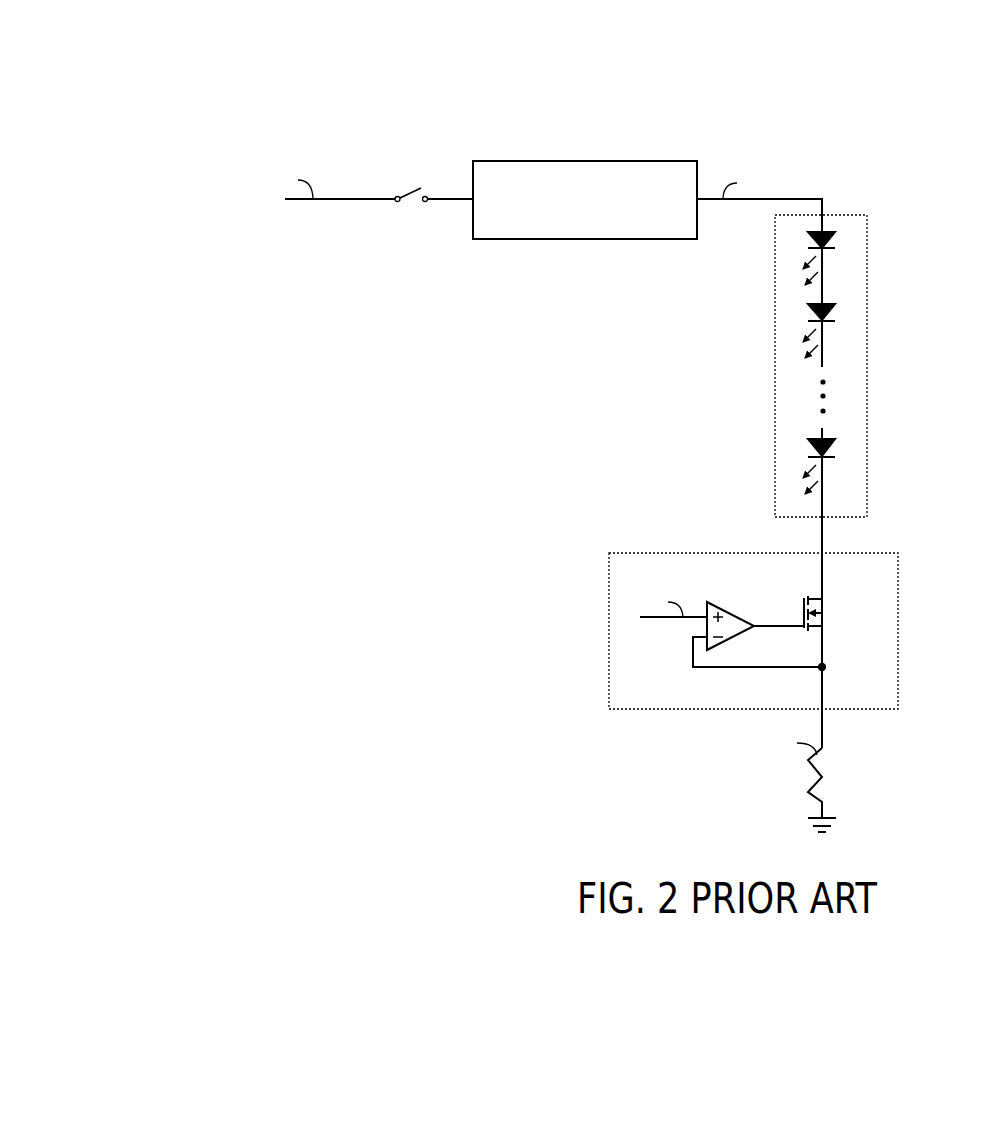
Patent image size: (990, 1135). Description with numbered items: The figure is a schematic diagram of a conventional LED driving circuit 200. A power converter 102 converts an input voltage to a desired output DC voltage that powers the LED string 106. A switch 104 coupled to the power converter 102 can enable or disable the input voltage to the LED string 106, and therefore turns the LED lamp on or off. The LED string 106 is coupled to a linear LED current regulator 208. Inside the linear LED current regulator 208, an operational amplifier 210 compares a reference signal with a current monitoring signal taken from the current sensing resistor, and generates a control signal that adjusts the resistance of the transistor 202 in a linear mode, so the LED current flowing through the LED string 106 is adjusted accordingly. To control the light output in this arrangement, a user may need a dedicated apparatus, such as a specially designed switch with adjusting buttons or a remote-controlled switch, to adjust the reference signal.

The LED driving circuit 200 is at (182, 117).
The power converter 102 is at (630, 160).
The switch 104 is at (412, 192).
The LED string 106 is at (868, 318).
The linear LED current regulator 208 is at (670, 553).
The transistor 202 is at (805, 612).
The operational amplifier 210 is at (733, 637).